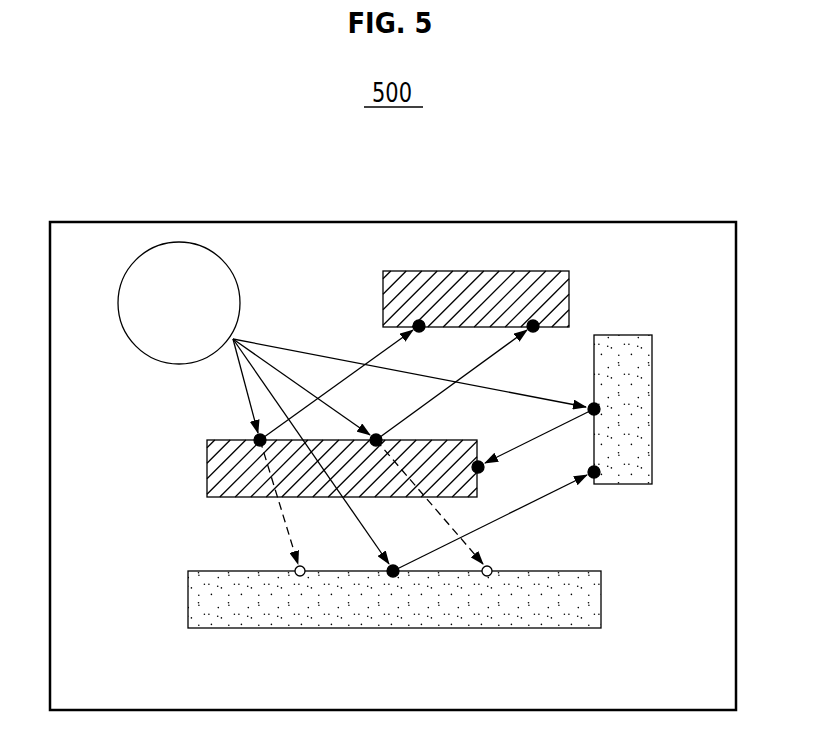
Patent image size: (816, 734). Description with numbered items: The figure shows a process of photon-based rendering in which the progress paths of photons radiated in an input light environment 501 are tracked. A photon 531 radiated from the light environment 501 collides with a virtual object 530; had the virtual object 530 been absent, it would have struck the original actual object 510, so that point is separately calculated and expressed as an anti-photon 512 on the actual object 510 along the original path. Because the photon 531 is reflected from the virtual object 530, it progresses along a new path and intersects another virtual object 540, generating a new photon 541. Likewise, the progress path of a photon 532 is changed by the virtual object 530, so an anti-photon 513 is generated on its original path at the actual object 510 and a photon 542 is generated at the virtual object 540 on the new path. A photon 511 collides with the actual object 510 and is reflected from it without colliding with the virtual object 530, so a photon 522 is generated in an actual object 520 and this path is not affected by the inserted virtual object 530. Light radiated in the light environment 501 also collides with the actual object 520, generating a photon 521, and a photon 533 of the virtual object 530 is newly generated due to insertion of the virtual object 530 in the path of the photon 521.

The light environment 501 is at (178, 242).
The actual object 510 is at (188, 598).
The photon 511 is at (393, 565).
The anti-photon 512 is at (296, 567).
The anti-photon 513 is at (492, 568).
The actual object 520 is at (624, 335).
The photon 521 is at (588, 414).
The photon 522 is at (592, 479).
The virtual object 530 is at (207, 466).
The photon 531 is at (255, 437).
The photon 532 is at (376, 433).
The photon 533 is at (484, 462).
The virtual object 540 is at (474, 271).
The photon 541 is at (425, 330).
The photon 542 is at (538, 332).